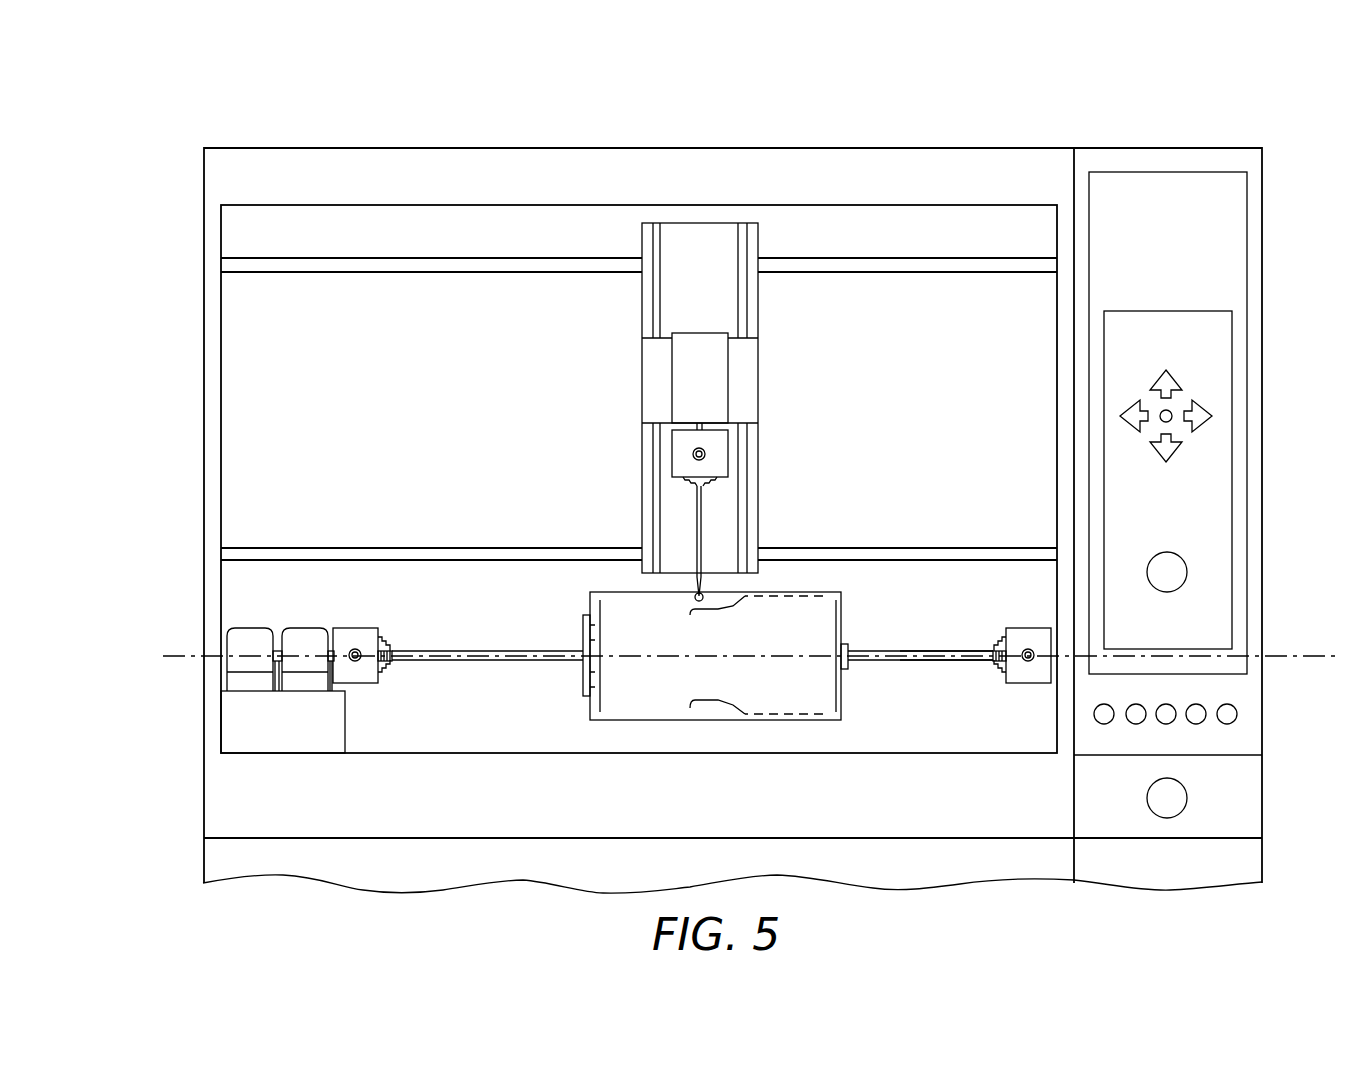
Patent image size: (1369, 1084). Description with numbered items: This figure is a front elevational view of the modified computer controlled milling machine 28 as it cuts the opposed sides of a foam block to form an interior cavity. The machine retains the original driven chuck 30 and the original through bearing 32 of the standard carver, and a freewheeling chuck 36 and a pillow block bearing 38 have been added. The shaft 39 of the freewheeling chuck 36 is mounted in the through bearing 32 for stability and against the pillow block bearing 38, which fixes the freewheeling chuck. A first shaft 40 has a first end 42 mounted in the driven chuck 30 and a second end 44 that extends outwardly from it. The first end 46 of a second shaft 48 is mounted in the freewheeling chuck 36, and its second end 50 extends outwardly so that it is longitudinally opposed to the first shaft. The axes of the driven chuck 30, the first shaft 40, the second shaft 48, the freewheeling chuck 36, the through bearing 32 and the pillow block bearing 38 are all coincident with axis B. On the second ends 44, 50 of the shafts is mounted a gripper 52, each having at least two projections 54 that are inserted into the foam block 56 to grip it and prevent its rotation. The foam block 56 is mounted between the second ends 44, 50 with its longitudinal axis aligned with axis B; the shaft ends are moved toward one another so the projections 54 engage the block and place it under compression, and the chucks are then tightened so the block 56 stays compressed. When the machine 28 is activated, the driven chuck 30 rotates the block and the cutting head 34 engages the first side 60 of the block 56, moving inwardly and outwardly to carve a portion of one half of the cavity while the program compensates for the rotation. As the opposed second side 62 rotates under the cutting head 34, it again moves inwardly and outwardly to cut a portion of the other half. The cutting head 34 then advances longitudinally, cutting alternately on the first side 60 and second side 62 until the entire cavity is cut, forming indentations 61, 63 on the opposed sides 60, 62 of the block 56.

The milling machine 28 is at (826, 148).
The driven chuck 30 is at (1030, 683).
The through bearing 32 is at (302, 632).
The cutting head 34 is at (678, 465).
The freewheeling chuck 36 is at (355, 637).
The pillow block bearing 38 is at (255, 637).
The shaft of the freewheeling chuck 39 is at (277, 650).
The first shaft 40 is at (928, 652).
The first end of first shaft 42 is at (993, 650).
The second end of first shaft 44 is at (858, 651).
The first end of second shaft 46 is at (400, 653).
The second shaft 48 is at (472, 651).
The second end of second shaft 50 is at (583, 625).
The gripper 52 is at (583, 690).
The projections 54 is at (600, 688).
The foam block 56 is at (670, 708).
The first side of foam block 60 is at (835, 592).
The indentation 61 is at (790, 592).
The second side of foam block 62 is at (833, 720).
The indentation 63 is at (790, 718).
The axis B is at (1318, 656).